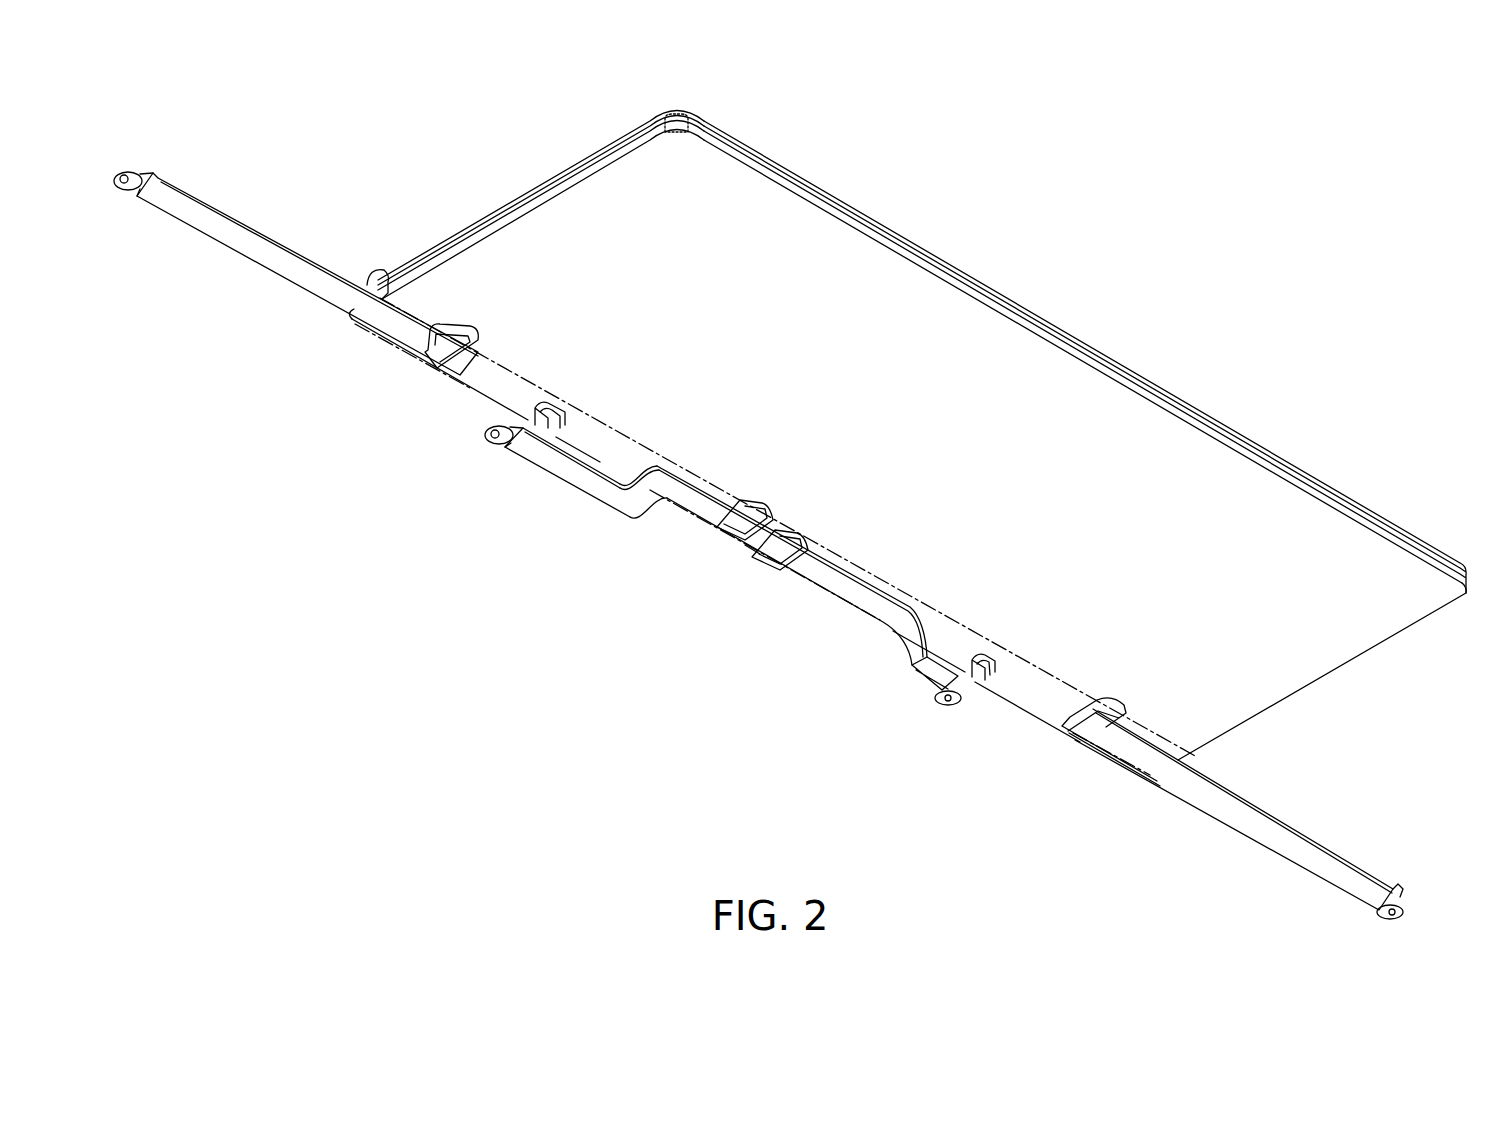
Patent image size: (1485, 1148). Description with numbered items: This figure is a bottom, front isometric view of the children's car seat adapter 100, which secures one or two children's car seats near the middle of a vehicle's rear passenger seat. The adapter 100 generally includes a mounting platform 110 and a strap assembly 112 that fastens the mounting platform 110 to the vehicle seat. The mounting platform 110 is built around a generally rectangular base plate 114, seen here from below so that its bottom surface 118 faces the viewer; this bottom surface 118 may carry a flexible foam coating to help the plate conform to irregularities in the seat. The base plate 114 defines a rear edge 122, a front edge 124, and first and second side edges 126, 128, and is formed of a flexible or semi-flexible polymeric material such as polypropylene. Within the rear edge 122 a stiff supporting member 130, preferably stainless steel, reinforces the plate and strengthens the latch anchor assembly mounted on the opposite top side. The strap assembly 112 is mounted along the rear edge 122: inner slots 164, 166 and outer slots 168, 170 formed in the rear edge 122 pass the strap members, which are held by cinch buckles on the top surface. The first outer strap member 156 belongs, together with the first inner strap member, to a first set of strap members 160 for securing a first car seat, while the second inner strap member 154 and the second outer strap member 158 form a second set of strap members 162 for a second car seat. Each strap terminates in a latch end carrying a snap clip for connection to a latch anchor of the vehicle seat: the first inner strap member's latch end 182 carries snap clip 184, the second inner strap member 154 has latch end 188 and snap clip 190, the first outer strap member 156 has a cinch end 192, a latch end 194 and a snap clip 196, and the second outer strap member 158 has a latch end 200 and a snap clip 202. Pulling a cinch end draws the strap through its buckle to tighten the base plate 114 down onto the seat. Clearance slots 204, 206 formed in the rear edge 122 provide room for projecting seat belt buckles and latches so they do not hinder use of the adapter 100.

The car seat adapter 100 is at (778, 499).
The mounting platform 110 is at (898, 411).
The strap assembly 112 is at (769, 538).
The base plate 114 is at (677, 100).
The bottom surface 118 is at (612, 208).
The rear edge 122 is at (748, 550).
The front edge 124 is at (1098, 338).
The first side edge 126 is at (518, 196).
The second side edge 128 is at (1325, 680).
The supporting member 130 is at (764, 542).
The second inner strap member 154 is at (680, 589).
The first outer strap member 156 is at (284, 245).
The second outer strap member 158 is at (1261, 835).
The first set of strap members 160 is at (284, 325).
The right bracket portion 162 is at (1191, 835).
The inner slot 164 is at (720, 520).
The inner slot 166 is at (778, 565).
The outer slot 168 is at (428, 365).
The outer slot 170 is at (1115, 700).
The latch end 182 is at (527, 458).
The snap clip 184 is at (488, 442).
The latch end 188 is at (932, 682).
The snap clip 190 is at (946, 712).
The cinch end 192 is at (608, 495).
The latch end 194 is at (158, 198).
The snap clip 196 is at (118, 168).
The latch end 200 is at (1375, 890).
The snap clip 202 is at (1392, 918).
The clearance slot 204 is at (540, 405).
The clearance slot 206 is at (978, 655).